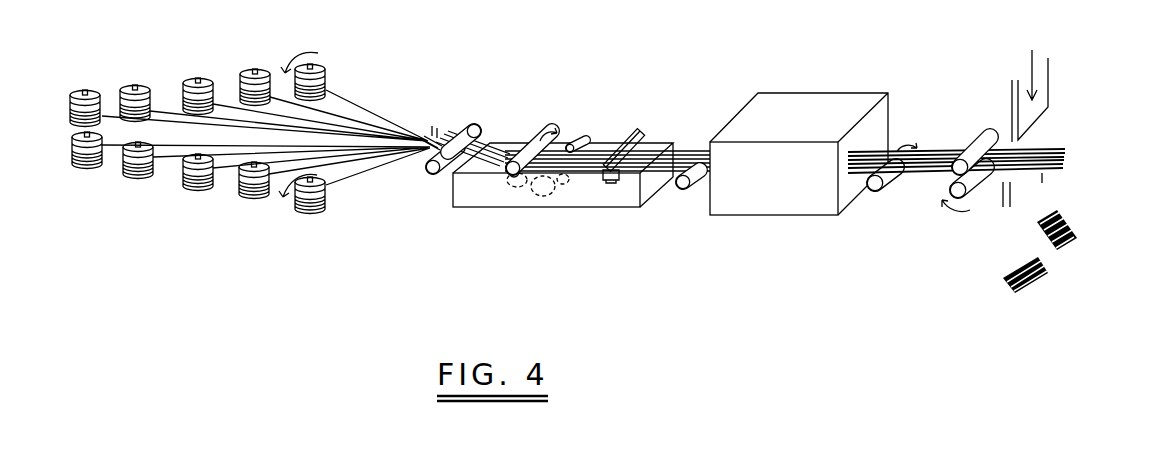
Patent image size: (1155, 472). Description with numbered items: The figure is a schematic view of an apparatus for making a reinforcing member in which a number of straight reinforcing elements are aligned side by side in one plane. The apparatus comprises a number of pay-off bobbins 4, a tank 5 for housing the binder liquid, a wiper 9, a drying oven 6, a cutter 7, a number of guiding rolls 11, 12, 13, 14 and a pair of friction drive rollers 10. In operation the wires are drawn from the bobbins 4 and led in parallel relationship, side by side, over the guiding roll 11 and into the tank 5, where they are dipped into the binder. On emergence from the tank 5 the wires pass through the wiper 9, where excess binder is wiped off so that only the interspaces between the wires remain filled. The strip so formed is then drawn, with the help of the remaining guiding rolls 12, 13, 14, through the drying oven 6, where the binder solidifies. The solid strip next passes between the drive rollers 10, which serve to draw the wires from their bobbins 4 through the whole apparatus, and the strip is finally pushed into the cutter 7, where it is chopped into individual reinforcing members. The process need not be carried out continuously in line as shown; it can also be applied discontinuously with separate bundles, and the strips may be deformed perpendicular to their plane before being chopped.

The pay-off bobbins 4 is at (133, 80).
The guiding roll 11 is at (474, 125).
The guiding roll 12 is at (555, 130).
The wiper 9 is at (643, 130).
The tank 5 is at (588, 197).
The guiding roll 13 is at (682, 193).
The drying oven 6 is at (765, 200).
The guiding roll 14 is at (870, 200).
The friction drive rollers 10 is at (990, 137).
The cutter 7 is at (1045, 98).